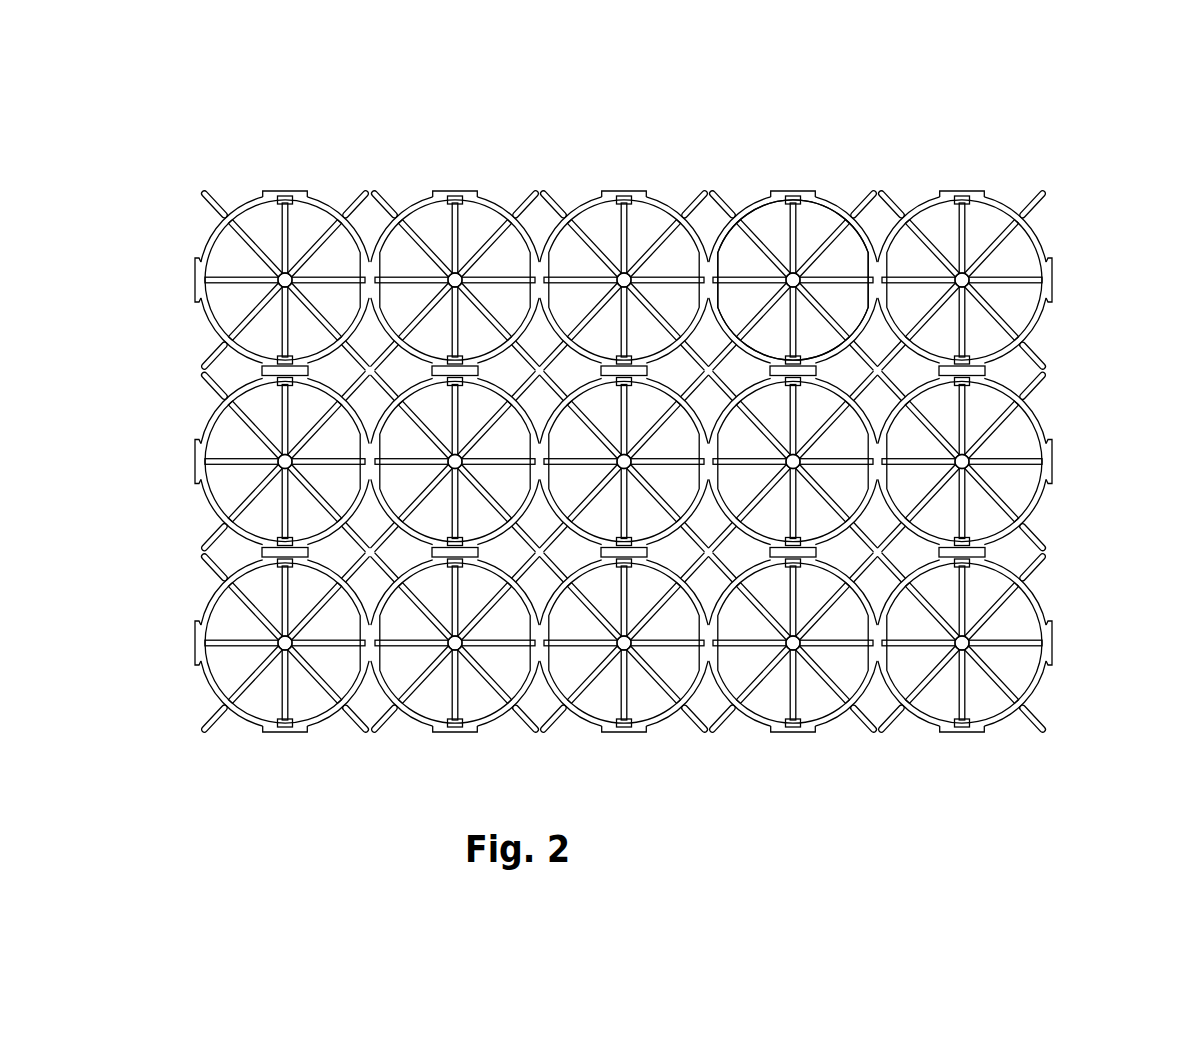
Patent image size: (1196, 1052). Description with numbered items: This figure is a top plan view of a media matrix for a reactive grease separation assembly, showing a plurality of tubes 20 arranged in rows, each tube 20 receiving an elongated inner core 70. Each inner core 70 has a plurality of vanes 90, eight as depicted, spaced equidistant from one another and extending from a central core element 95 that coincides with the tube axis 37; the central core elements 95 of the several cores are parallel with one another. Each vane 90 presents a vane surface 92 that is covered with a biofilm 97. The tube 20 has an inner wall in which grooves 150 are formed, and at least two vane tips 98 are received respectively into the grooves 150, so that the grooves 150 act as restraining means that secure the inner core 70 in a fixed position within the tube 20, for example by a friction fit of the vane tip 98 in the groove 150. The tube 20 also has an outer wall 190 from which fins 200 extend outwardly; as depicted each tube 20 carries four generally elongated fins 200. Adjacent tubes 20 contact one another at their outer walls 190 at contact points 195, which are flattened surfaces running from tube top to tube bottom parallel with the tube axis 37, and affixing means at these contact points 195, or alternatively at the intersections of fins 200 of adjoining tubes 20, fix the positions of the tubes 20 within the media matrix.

The tube 20 is at (843, 212).
The tube axis 37 is at (740, 203).
The inner core 70 is at (816, 220).
The vane 90 is at (315, 237).
The vane surface 92 is at (450, 237).
The central core element 95 is at (537, 260).
The biofilm 97 is at (285, 235).
The vane tip 98 is at (603, 190).
The groove 150 is at (280, 190).
The outer wall 190 is at (993, 200).
The contact point 195 is at (778, 188).
The fin 200 is at (691, 215).